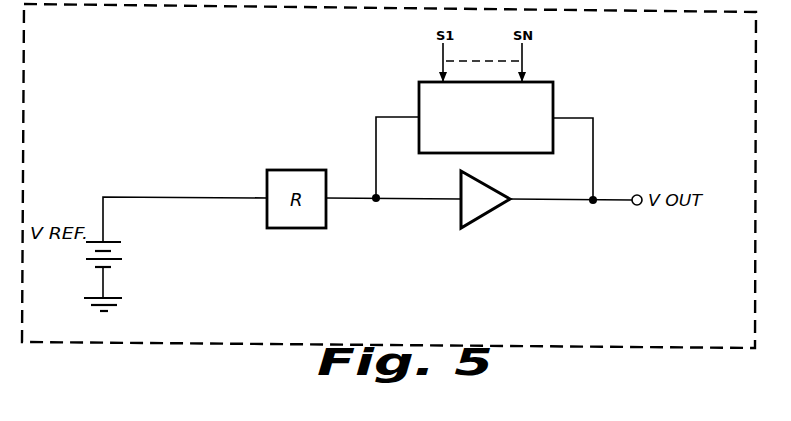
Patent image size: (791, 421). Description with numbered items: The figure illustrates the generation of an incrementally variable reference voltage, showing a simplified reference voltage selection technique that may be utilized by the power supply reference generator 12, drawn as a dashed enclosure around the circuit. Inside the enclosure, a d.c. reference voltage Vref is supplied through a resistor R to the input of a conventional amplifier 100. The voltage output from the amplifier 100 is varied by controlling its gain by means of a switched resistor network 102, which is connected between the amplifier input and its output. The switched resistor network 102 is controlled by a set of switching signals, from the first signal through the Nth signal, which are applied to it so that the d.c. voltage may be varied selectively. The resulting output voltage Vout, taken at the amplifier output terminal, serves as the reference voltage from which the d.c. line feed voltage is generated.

The power supply reference generator 12 is at (645, 348).
The amplifier 100 is at (486, 212).
The switched resistor network 102 is at (553, 101).